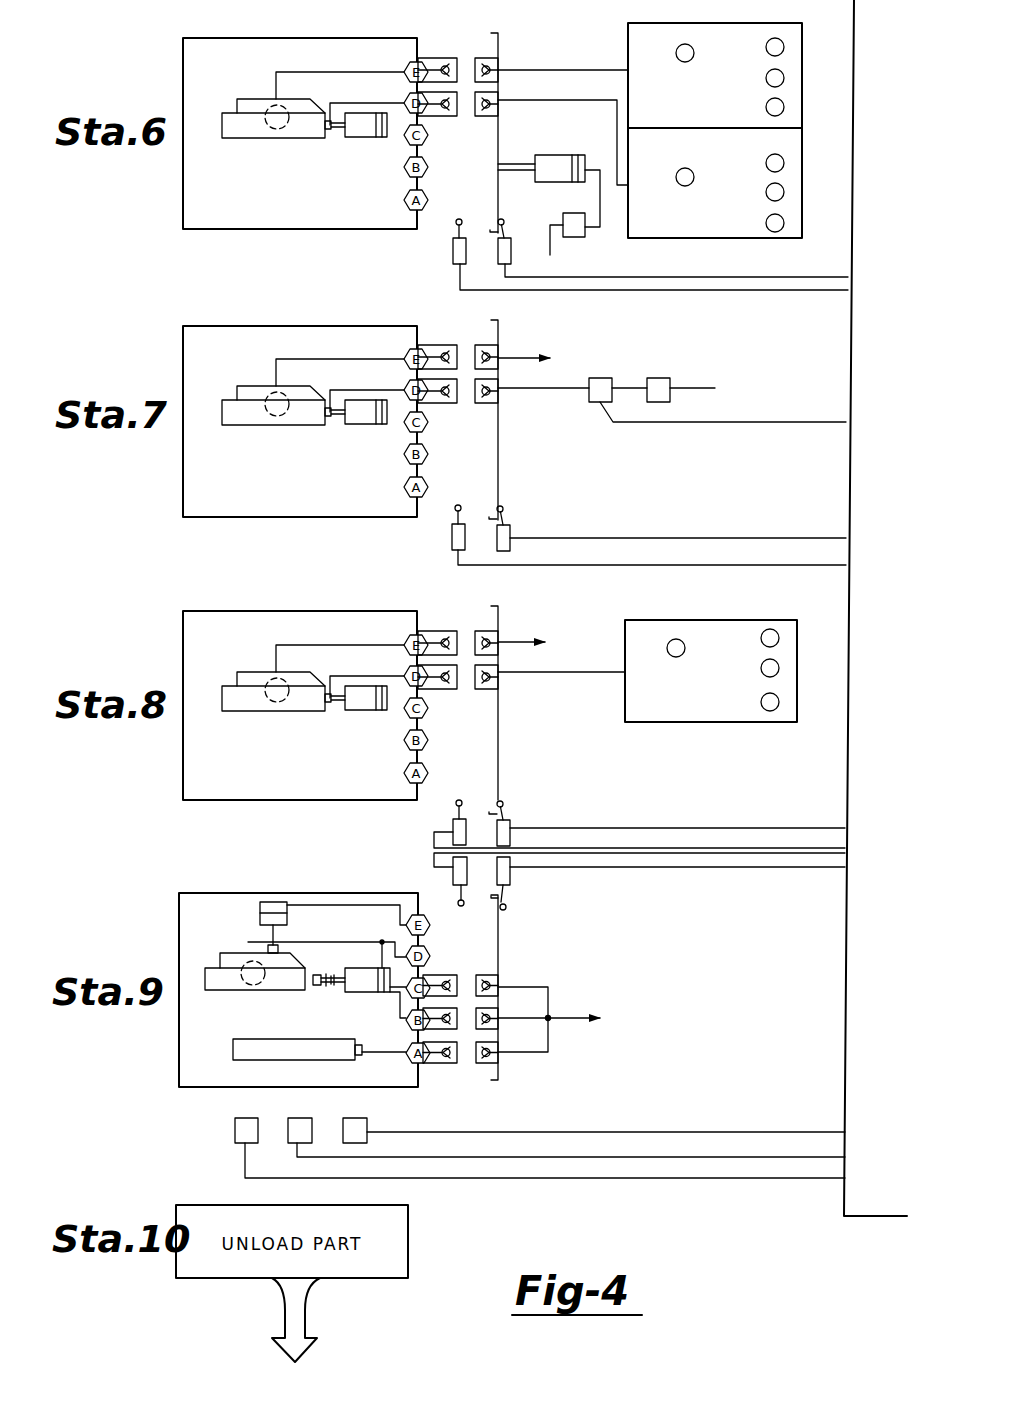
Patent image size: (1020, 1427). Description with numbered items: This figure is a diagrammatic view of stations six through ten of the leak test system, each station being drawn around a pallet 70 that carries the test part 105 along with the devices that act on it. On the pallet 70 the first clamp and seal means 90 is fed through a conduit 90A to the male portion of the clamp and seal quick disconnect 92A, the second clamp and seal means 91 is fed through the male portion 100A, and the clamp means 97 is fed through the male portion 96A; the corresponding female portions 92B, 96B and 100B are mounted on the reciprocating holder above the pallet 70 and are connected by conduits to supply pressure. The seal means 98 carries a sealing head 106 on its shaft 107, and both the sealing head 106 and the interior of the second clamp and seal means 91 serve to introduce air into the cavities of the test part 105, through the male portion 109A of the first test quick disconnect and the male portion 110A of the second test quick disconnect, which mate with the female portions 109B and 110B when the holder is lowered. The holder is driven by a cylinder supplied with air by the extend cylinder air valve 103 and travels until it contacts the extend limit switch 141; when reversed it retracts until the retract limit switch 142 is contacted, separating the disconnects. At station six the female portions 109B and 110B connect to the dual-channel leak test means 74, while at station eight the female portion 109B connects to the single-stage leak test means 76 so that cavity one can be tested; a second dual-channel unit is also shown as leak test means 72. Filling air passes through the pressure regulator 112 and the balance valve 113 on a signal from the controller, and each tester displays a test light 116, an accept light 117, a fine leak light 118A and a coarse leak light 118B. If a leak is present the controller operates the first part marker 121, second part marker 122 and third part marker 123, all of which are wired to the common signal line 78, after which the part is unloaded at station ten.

The pallet 70 is at (184, 205).
The control panel 72 is at (655, 23).
The dual-channel leak test means 74 is at (640, 240).
The single-stage leak test means 76 is at (648, 722).
The main bus line 78 is at (906, 357).
The first clamp and seal means 90 is at (268, 1060).
The conduit 90A is at (362, 1053).
The second clamp and seal means 91 is at (290, 105).
The clamp and seal quick disconnect male portion 92A is at (445, 1063).
The clamp and seal quick disconnect female portion 92B is at (498, 1065).
The clamp means quick disconnect male portion 96A is at (406, 1022).
The clamp means quick disconnect female portion 96B is at (498, 1018).
The clamp means 97 is at (260, 910).
The seal means 98 is at (383, 140).
The second clamp and seal means quick disconnect male portion 100A is at (440, 975).
The second clamp and seal means quick disconnect female portion 100B is at (498, 970).
The extend cylinder air valve 103 is at (565, 238).
The test part 105 is at (247, 139).
The sealing head 106 is at (323, 140).
The shaft 107 is at (330, 130).
The first test quick disconnect male portion 109A is at (441, 117).
The first test quick disconnect female portion 109B is at (480, 114).
The second test quick disconnect male portion 110A is at (428, 58).
The second test quick disconnect female portion 110B is at (498, 70).
The pressure regulator 112 is at (657, 378).
The balance valve 113 is at (627, 355).
The test light 116 is at (676, 55).
The accept light 117 is at (781, 40).
The fine leak light 118A is at (782, 76).
The coarse leak light 118B is at (781, 113).
The first part marker 121 is at (235, 1137).
The second part marker 122 is at (288, 1128).
The third part marker 123 is at (367, 1125).
The extend limit switch 141 is at (453, 263).
The retract limit switch 142 is at (511, 240).